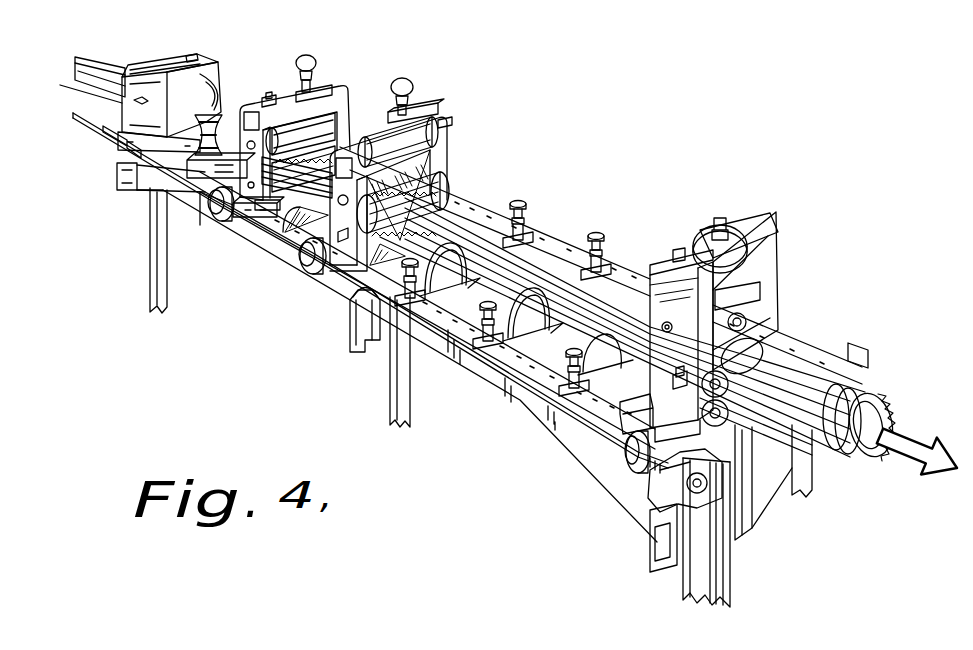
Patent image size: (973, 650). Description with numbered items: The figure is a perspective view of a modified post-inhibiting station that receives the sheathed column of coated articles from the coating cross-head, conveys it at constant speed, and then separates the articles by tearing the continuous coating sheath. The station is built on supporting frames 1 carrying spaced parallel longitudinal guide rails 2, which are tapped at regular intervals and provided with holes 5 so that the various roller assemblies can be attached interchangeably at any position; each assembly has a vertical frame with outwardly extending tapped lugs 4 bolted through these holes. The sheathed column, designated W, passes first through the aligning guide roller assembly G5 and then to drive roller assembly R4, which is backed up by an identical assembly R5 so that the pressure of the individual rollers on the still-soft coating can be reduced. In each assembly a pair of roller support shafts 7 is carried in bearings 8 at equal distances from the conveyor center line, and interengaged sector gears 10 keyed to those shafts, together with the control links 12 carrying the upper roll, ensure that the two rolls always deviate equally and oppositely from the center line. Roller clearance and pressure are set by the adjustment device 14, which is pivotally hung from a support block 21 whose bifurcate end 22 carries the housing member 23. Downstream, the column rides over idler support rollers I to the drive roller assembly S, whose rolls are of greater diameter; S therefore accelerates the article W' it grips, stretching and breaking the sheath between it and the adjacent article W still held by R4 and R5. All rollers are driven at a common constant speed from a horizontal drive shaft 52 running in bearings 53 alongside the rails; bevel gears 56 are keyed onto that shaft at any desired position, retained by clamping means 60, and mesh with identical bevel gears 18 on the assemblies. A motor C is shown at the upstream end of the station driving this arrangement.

The motor C is at (170, 60).
The work piece W is at (181, 127).
The article gripped by S W' is at (639, 329).
The bifurcate end 22 is at (300, 92).
The drive roller assembly R4 is at (346, 95).
The drive roller assembly R5 is at (448, 131).
The adjustment device 14 is at (403, 78).
The guide roller assembly G5 is at (266, 96).
The housing member 23 is at (410, 109).
The support block 21 is at (433, 121).
The control link 12 is at (328, 124).
The sector gear 10 is at (330, 134).
The roller support shaft 7 is at (433, 151).
The guide rail 2 is at (464, 207).
The idler support roller I is at (524, 216).
The drive roller assembly S is at (738, 220).
The horizontal drive shaft 52 is at (240, 233).
The clamping means 60 is at (303, 257).
The bevel gear 56 is at (318, 260).
The bearing 53 is at (363, 300).
The supporting frame 1 is at (395, 393).
The hole 5 is at (537, 372).
The tapped lug 4 is at (612, 437).
The bearing 8 is at (660, 327).
The bevel gear 18 is at (660, 493).